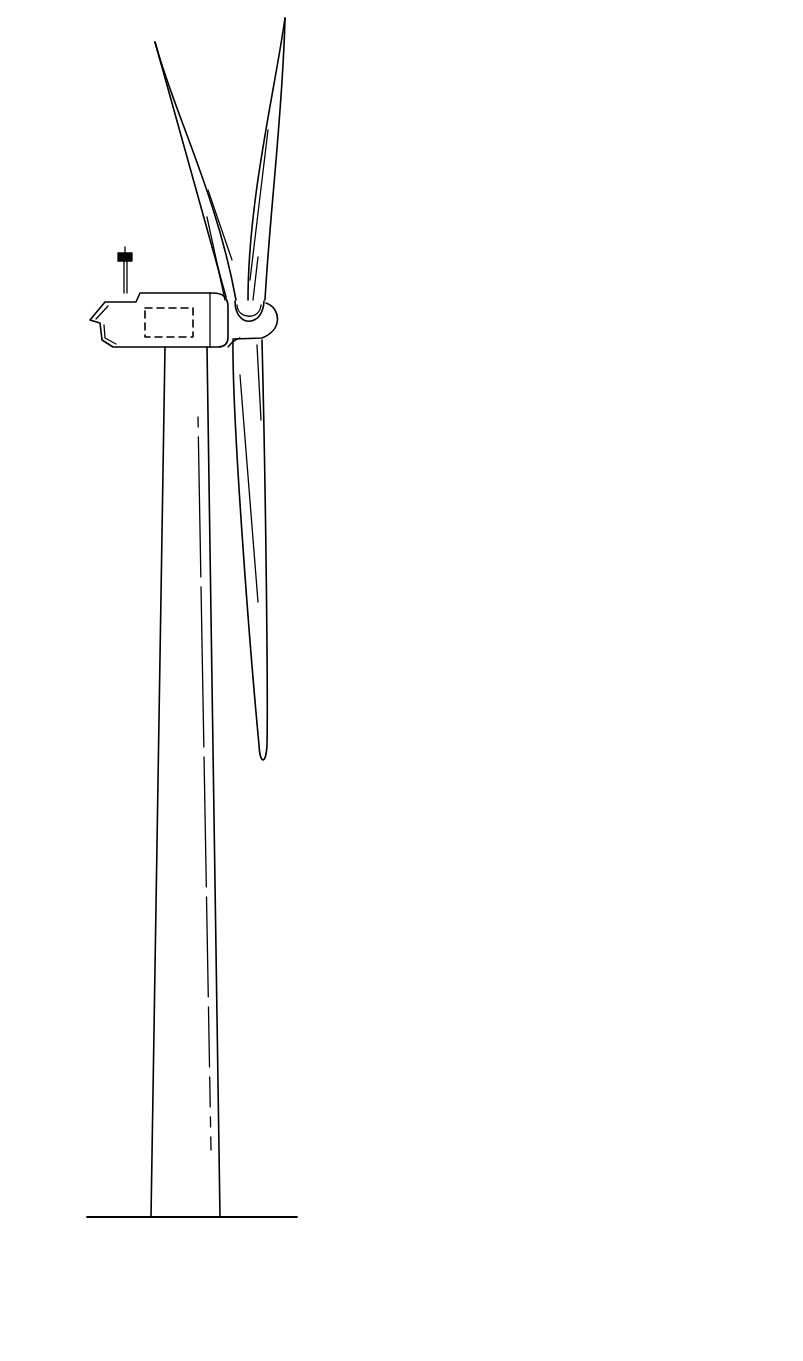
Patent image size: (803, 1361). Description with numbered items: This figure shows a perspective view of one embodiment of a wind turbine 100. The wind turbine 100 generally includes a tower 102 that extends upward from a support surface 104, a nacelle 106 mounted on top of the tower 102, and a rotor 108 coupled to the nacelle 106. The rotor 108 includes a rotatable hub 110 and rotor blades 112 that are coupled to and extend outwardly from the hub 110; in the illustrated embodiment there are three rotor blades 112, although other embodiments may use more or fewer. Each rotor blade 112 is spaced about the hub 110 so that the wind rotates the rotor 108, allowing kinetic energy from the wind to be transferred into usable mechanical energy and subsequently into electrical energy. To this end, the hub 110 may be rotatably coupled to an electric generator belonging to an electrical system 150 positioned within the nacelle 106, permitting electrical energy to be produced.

The wind turbine 100 is at (446, 140).
The tower 102 is at (196, 853).
The support surface 104 is at (98, 1216).
The nacelle 106 is at (134, 348).
The rotor 108 is at (320, 275).
The rotatable hub 110 is at (278, 316).
The rotor blade 112 is at (265, 139).
The electrical system 150 is at (173, 305).